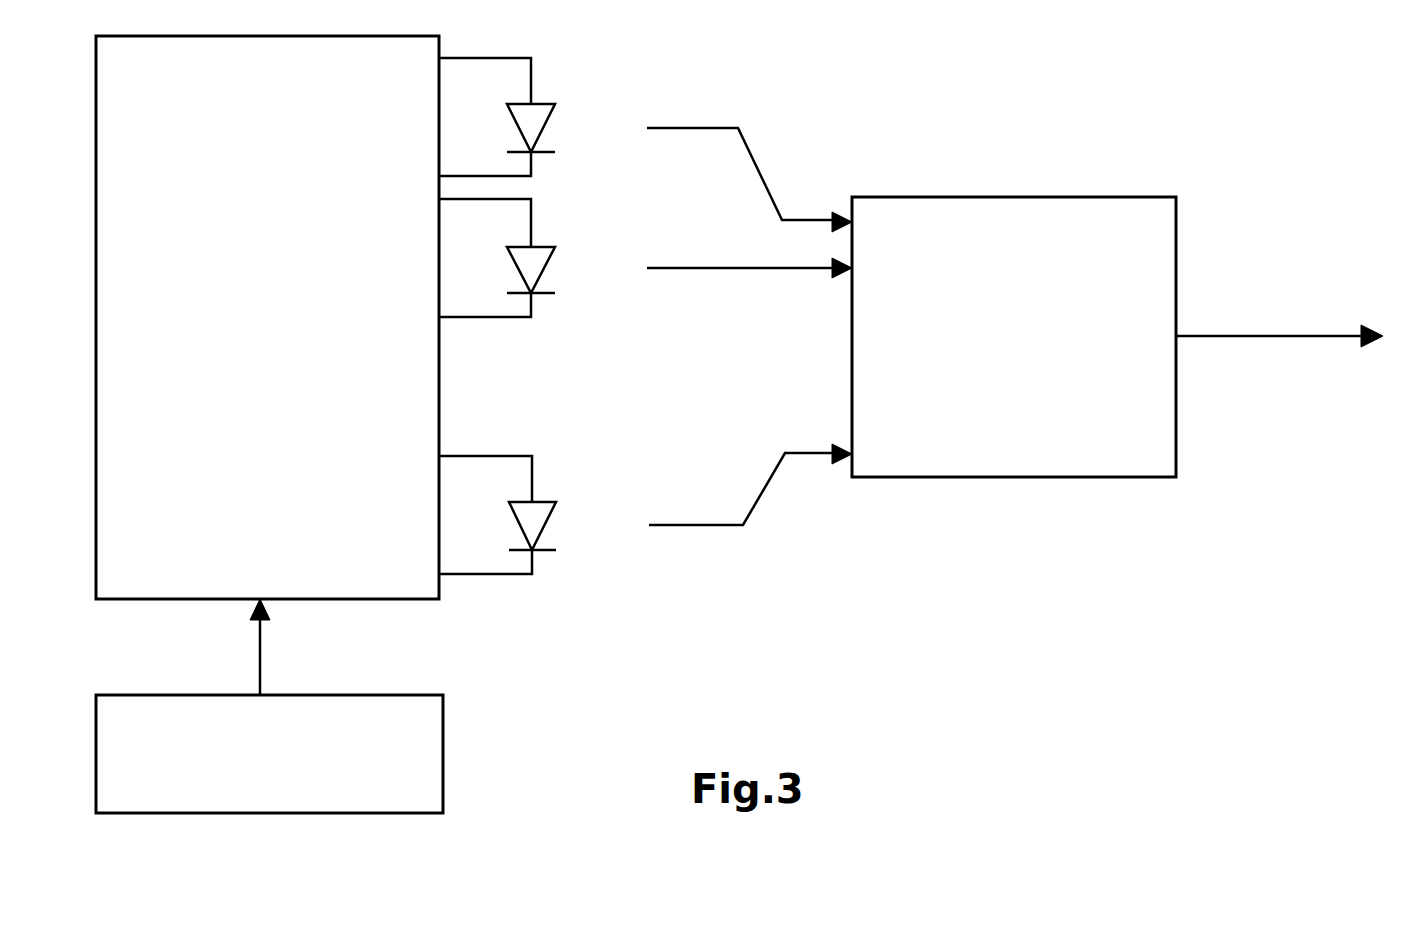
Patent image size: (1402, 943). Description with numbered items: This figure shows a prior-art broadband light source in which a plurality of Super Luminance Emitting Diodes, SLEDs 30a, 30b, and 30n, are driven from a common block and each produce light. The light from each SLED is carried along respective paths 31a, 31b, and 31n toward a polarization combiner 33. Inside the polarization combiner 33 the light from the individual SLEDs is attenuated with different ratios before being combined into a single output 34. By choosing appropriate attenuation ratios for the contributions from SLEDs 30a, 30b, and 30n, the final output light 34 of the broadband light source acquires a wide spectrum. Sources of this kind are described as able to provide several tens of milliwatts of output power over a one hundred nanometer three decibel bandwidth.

The SLED 30a is at (528, 117).
The SLED 30b is at (529, 258).
The SLED 30n is at (529, 515).
The input signal line 31a is at (749, 164).
The input signal line 31b is at (749, 245).
The input signal line 31n is at (750, 474).
The polarization combiner 33 is at (1014, 308).
The output 34 is at (1281, 328).